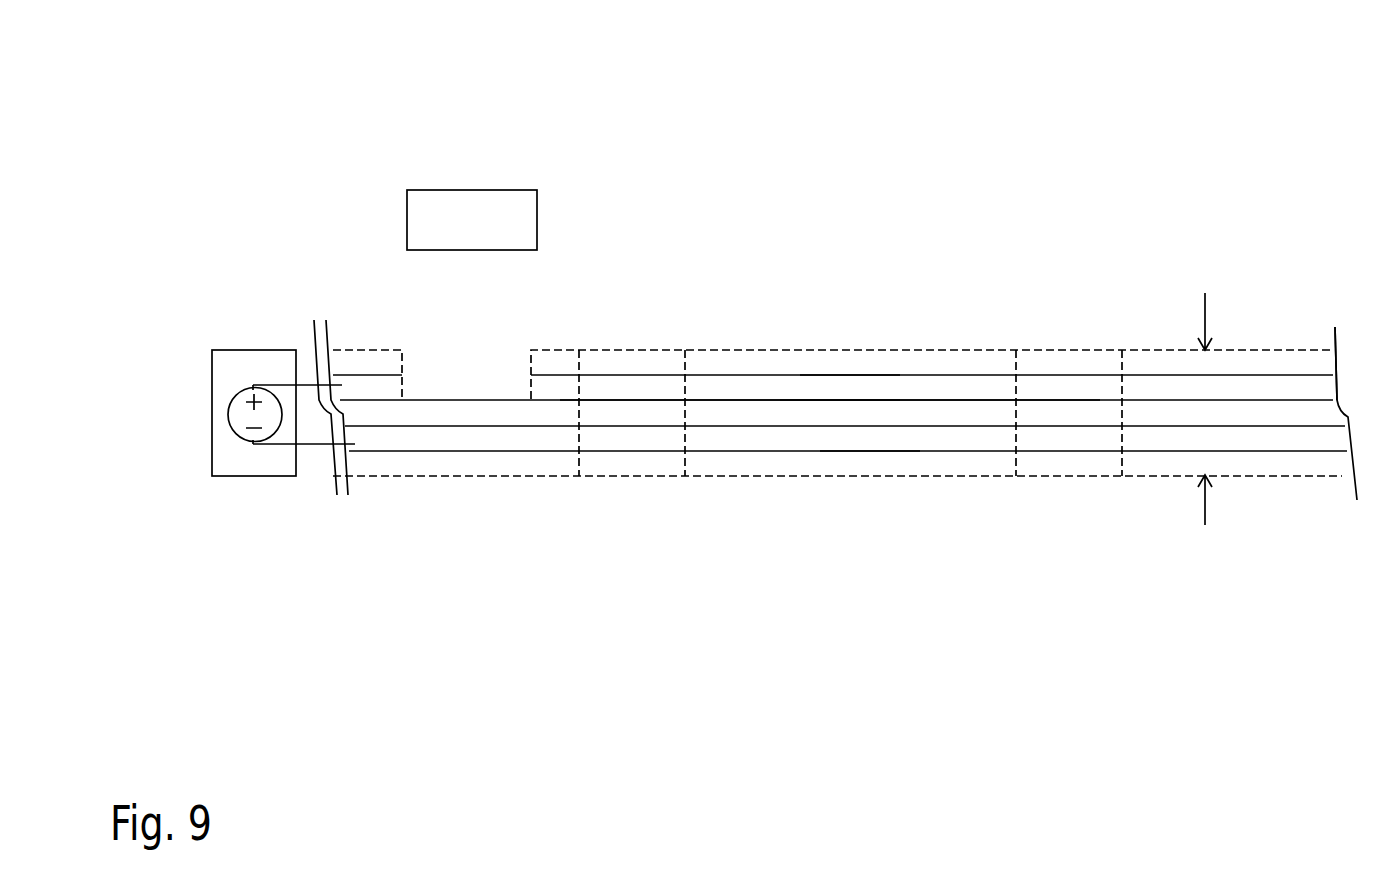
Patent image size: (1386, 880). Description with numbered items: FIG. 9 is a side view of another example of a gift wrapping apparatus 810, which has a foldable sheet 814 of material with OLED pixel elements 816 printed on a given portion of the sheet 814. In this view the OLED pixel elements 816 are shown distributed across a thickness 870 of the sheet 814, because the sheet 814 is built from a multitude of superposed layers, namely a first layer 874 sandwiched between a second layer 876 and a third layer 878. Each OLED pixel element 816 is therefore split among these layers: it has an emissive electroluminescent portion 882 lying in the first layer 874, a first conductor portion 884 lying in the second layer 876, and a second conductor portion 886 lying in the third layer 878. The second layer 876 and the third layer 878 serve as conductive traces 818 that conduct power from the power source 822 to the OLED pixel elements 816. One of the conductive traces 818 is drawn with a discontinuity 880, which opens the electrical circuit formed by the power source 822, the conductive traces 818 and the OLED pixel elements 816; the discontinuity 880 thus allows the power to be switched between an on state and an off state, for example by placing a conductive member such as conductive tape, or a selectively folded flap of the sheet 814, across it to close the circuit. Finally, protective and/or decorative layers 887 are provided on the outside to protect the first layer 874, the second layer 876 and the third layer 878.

The gift wrapping apparatus 810 is at (307, 146).
The foldable sheet 814 is at (1270, 350).
The OLED pixel elements 816 is at (685, 350).
The conductive traces 818 is at (785, 435).
The power source 822 is at (250, 352).
The thickness 870 is at (1203, 310).
The first layer 874 is at (832, 415).
The second layer 876 is at (869, 393).
The third layer 878 is at (894, 435).
The discontinuity 880 is at (470, 378).
The emissive electroluminescent portion 882 is at (609, 408).
The first conductor portion 884 is at (512, 190).
The second conductor portion 886 is at (672, 434).
The protective and/or decorative layers 887 is at (1290, 362).